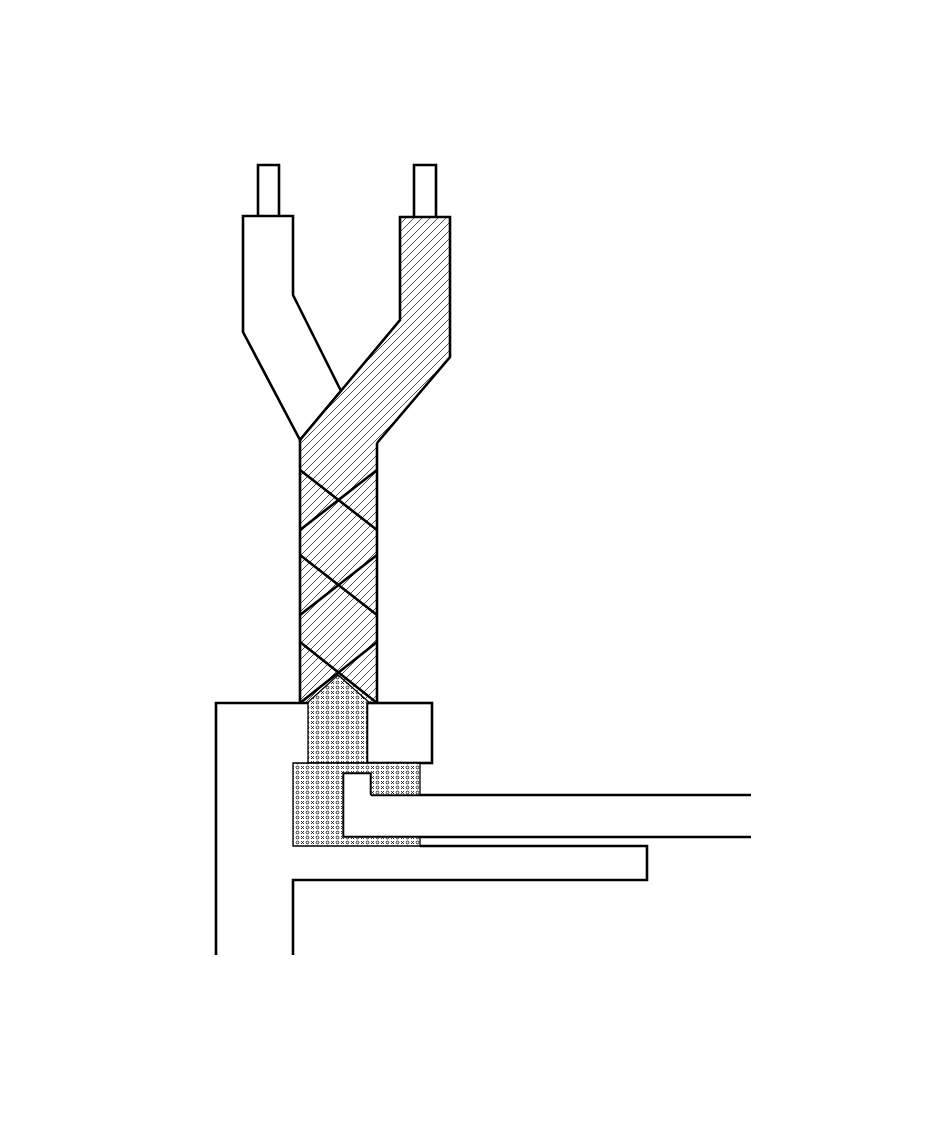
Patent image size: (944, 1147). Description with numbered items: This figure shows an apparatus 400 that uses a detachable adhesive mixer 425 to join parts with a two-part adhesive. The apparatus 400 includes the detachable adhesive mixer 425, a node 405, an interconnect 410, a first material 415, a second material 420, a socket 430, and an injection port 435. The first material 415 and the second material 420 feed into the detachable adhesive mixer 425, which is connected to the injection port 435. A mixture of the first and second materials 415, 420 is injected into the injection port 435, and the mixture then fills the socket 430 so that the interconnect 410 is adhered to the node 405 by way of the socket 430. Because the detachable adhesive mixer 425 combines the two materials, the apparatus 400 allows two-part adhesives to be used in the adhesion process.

The apparatus 400 is at (716, 137).
The node 405 is at (216, 775).
The interconnect 410 is at (742, 818).
The first material 415 is at (263, 248).
The second material 420 is at (443, 247).
The detachable adhesive mixer 425 is at (300, 535).
The socket 430 is at (318, 802).
The injection port 435 is at (300, 700).